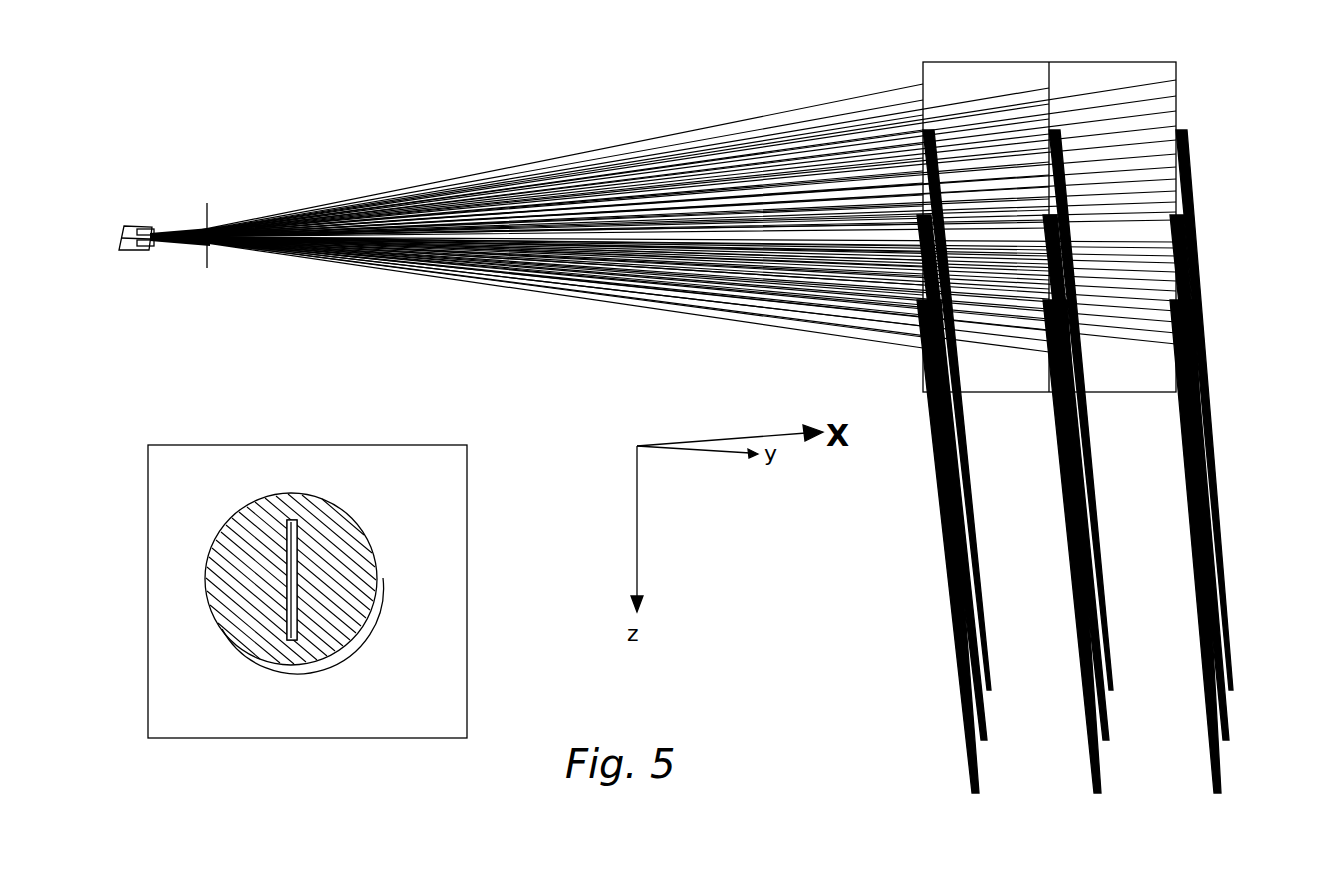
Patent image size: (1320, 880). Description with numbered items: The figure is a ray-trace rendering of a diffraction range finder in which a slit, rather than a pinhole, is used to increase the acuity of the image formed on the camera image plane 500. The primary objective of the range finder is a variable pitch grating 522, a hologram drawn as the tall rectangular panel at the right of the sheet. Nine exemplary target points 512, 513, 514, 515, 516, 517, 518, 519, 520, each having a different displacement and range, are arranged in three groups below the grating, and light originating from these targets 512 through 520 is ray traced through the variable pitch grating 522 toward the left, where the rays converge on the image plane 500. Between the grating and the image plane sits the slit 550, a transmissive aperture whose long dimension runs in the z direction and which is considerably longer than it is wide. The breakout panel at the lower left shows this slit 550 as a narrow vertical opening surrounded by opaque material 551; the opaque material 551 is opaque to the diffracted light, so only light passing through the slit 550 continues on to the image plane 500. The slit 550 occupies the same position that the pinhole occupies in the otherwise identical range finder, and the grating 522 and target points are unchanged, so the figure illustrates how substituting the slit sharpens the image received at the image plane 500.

The image plane 500 is at (130, 227).
The slit 550 is at (297, 426).
The opaque material 551 is at (366, 623).
The variable pitch grating 522 is at (923, 62).
The target point 512 is at (990, 690).
The target point 513 is at (985, 742).
The target point 514 is at (982, 790).
The target point 515 is at (1112, 690).
The target point 516 is at (1108, 742).
The target point 517 is at (1103, 790).
The target point 518 is at (1233, 690).
The target point 519 is at (1227, 742).
The target point 520 is at (1222, 790).